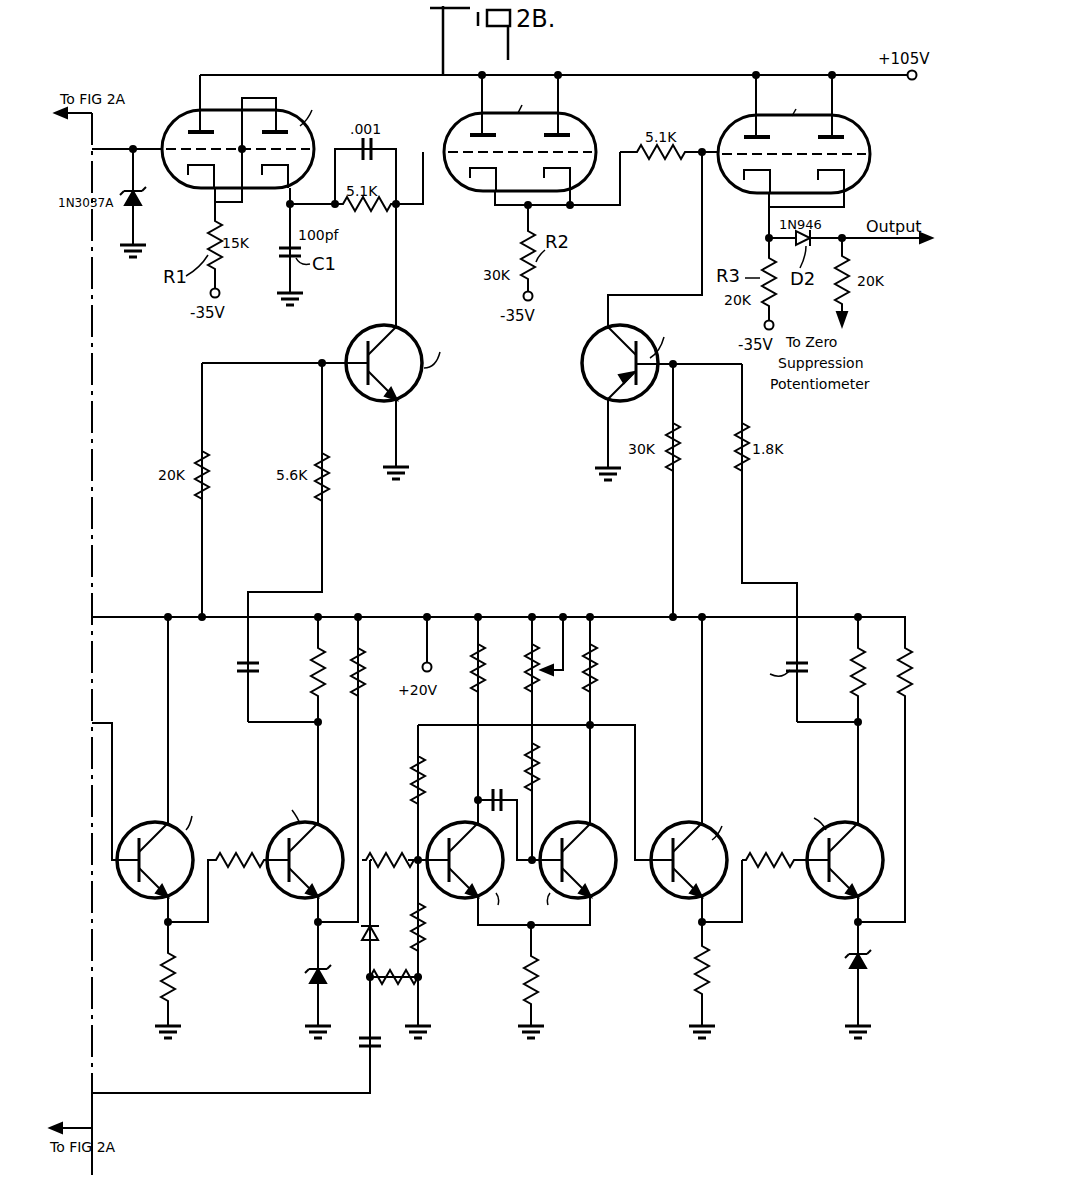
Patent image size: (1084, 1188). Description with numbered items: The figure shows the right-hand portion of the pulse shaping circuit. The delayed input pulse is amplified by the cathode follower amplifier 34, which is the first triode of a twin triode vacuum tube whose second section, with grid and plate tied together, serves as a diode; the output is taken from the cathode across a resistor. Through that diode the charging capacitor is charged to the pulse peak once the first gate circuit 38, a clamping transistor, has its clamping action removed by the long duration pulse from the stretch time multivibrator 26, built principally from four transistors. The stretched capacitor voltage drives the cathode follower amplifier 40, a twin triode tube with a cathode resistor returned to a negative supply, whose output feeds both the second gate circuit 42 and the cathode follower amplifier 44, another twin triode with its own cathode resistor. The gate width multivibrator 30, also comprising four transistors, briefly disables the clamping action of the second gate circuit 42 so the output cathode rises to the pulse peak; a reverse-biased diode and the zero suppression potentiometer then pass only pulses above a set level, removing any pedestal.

The cathode follower amplifier 34 is at (190, 196).
The cathode follower amplifier 40 is at (483, 200).
The cathode follower amplifier 44 is at (749, 200).
The first gate circuit 38 is at (416, 437).
The second gate circuit 42 is at (577, 470).
The stretch time multivibrator 26 is at (245, 873).
The gate width multivibrator 30 is at (503, 858).